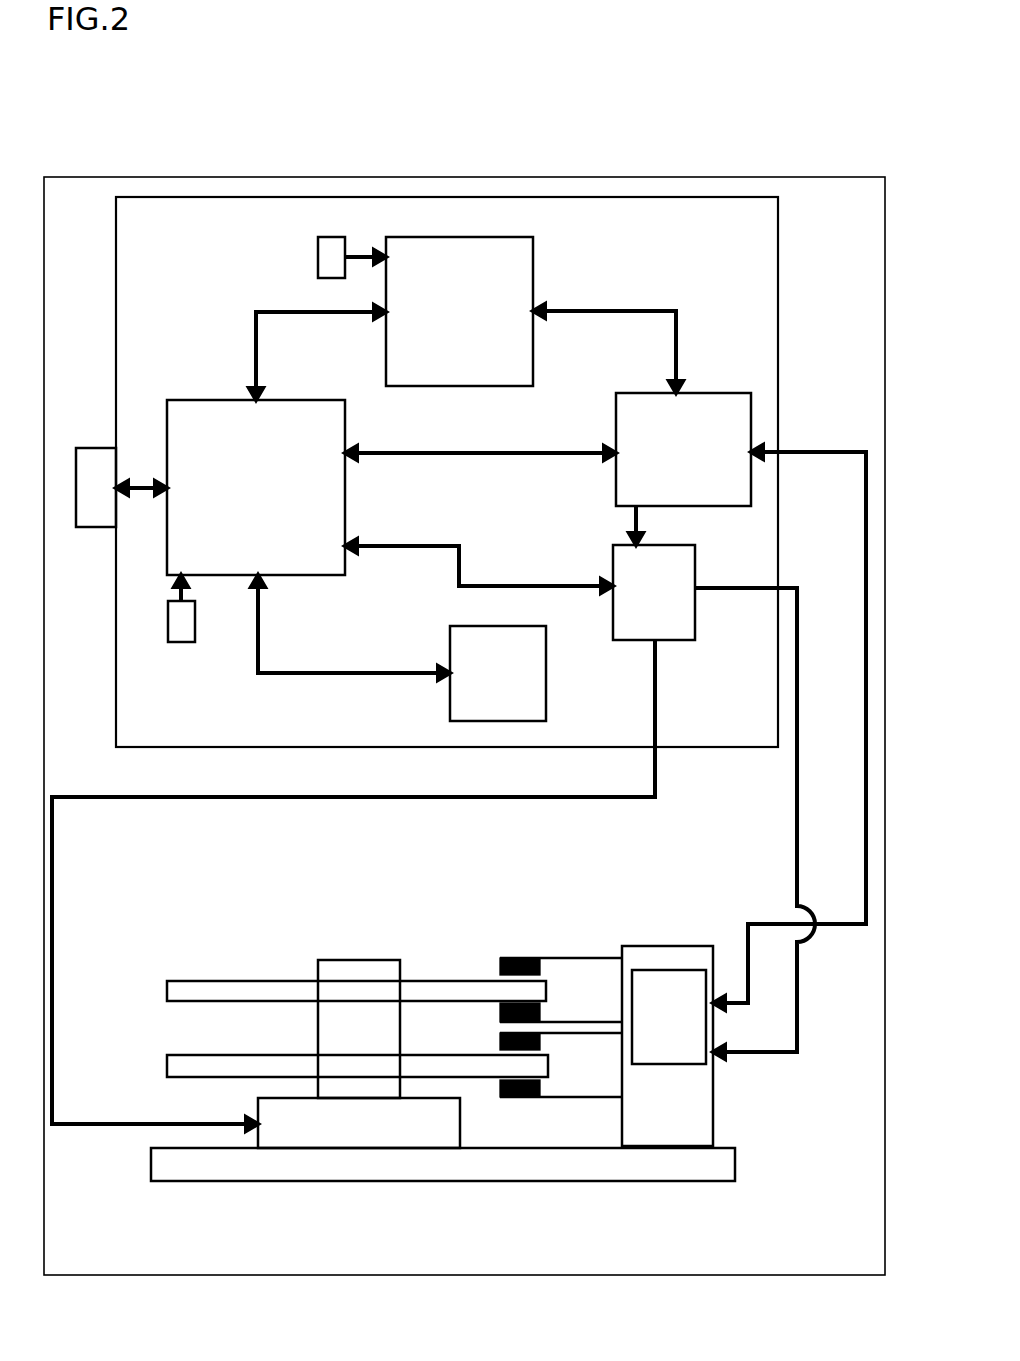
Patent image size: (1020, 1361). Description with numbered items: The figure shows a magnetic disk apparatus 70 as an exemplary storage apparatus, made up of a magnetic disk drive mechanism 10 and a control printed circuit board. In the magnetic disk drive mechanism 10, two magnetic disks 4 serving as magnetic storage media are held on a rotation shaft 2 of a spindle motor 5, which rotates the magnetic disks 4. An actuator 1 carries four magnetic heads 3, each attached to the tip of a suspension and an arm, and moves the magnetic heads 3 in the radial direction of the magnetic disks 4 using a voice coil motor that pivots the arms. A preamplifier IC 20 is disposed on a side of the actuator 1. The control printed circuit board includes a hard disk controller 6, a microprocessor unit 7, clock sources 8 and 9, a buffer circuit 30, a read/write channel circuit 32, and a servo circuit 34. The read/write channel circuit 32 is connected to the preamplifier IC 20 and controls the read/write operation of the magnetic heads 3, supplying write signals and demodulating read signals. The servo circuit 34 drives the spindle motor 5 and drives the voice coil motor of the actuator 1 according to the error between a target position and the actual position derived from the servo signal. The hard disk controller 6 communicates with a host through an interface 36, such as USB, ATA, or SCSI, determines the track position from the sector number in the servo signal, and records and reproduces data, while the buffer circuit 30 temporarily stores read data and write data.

The magnetic disk apparatus 70 is at (628, 176).
The microprocessor unit (MPU) 7 is at (512, 266).
The clock source 9 is at (328, 250).
The hard disk controller (HDC) 6 is at (190, 414).
The interface (I/F) 36 is at (90, 446).
The clock source 8 is at (178, 621).
The read/write channel circuit 32 is at (712, 408).
The servo circuit 34 is at (667, 613).
The buffer circuit 30 is at (531, 700).
The magnetic disk drive mechanism 10 is at (247, 896).
The spindle motor 5 is at (353, 1128).
The rotation shaft 2 is at (334, 960).
The magnetic disks 4 is at (165, 1050).
The magnetic heads 3 is at (495, 1087).
The actuator 1 is at (660, 945).
The preamplifier IC (head IC) 20 is at (693, 978).